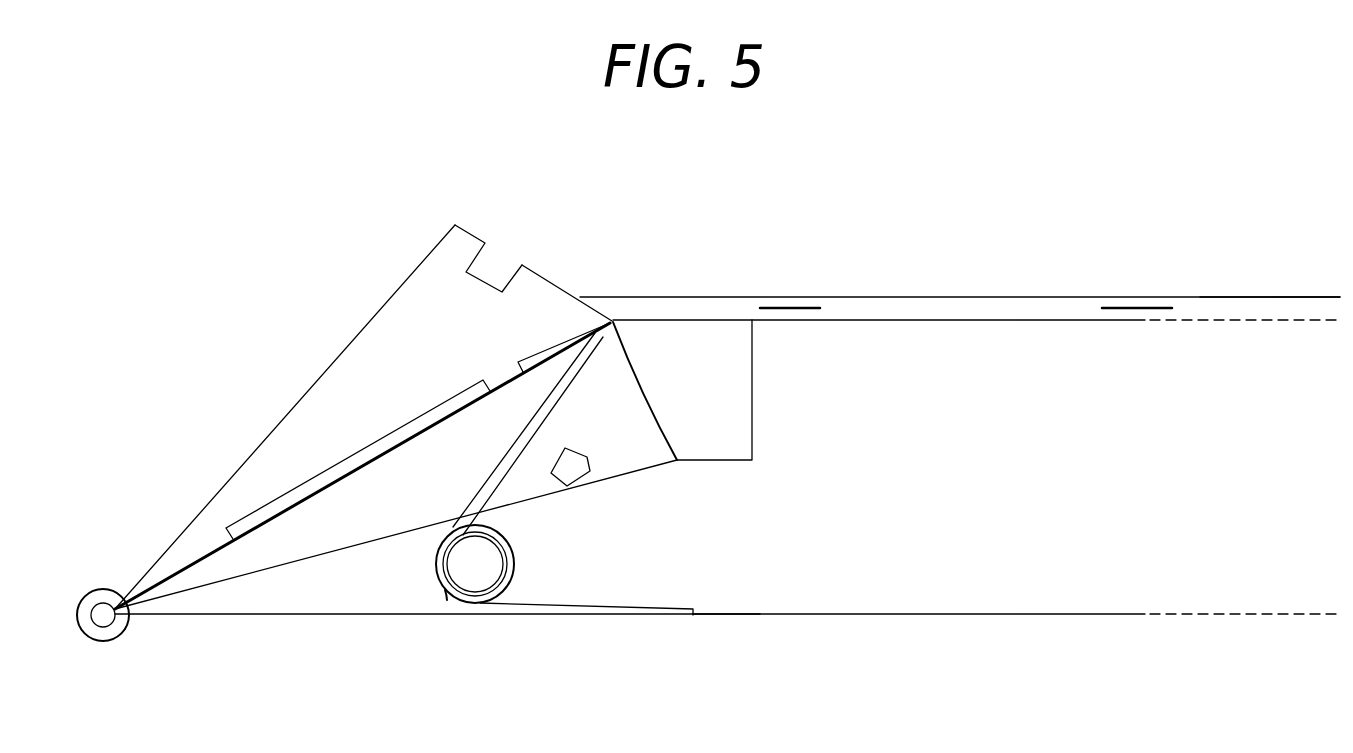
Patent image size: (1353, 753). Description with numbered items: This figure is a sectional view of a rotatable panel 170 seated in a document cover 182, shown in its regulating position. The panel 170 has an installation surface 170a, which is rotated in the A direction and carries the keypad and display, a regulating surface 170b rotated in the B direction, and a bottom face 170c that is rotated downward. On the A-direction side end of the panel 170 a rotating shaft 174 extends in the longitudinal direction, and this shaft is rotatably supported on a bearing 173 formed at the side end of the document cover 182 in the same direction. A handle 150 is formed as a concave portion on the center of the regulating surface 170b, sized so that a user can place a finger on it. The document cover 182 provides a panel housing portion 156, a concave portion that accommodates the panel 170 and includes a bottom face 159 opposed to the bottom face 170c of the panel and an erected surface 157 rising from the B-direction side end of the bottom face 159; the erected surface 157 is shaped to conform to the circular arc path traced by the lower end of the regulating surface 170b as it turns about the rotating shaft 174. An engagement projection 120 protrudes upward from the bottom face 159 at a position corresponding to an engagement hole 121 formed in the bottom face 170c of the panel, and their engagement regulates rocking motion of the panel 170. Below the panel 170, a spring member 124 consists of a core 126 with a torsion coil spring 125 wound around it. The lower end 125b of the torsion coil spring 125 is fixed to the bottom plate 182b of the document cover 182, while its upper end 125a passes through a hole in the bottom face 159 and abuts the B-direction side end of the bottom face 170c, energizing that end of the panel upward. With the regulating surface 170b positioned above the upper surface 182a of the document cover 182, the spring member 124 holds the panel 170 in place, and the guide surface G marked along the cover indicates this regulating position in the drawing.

The engagement projection 120 is at (573, 470).
The engagement hole 121 is at (488, 385).
The spring member 124 is at (436, 600).
The torsion coil spring 125 is at (585, 604).
The upper end of torsion coil spring 125a is at (590, 358).
The lower end of torsion coil spring 125b is at (680, 607).
The core 126 is at (436, 566).
The handle 150 is at (478, 258).
The panel housing portion 156 is at (662, 455).
The erected surface 157 is at (637, 392).
The bottom face 159 is at (607, 472).
The panel 170 is at (354, 376).
The installation surface 170a is at (232, 462).
The regulating surface 170b is at (565, 288).
The bottom face 170c is at (325, 488).
The bearing 173 is at (100, 642).
The rotating shaft 174 is at (99, 606).
The document cover 182 is at (882, 348).
The upper surface of document cover 182a is at (970, 320).
The bottom plate of document cover 182b is at (935, 613).
The gap G is at (1258, 307).